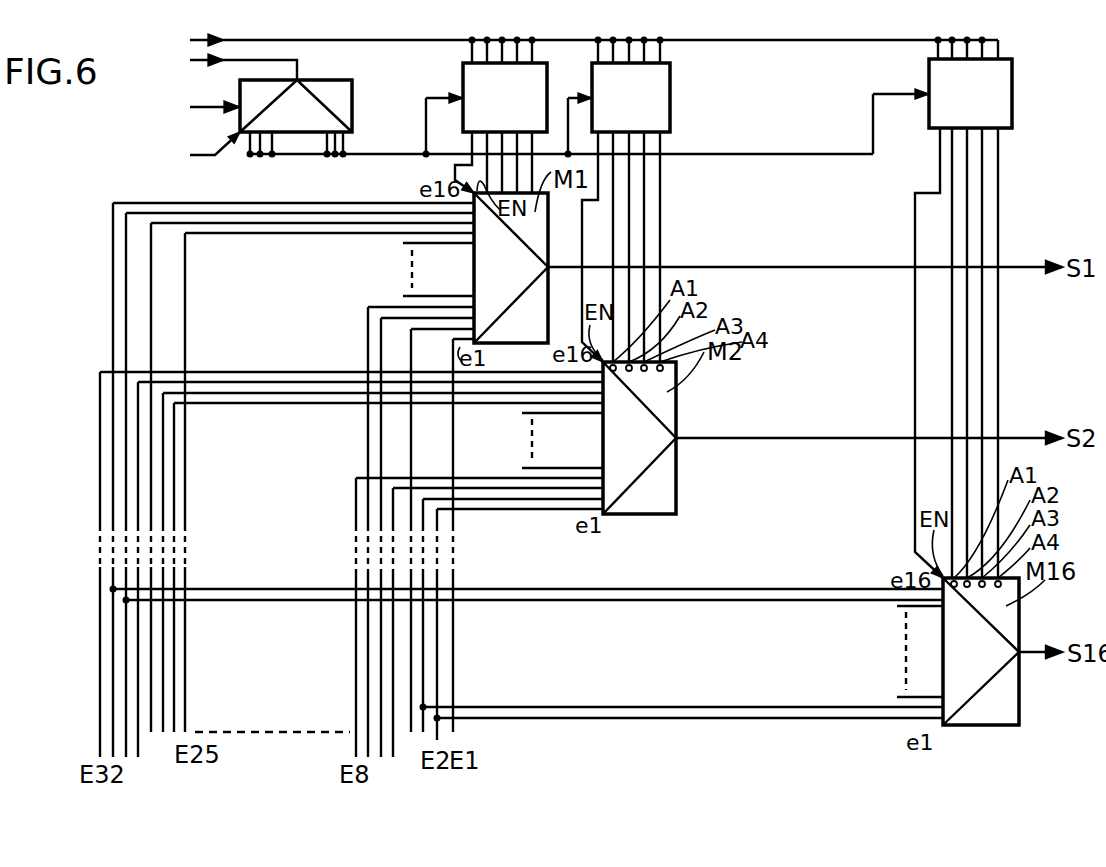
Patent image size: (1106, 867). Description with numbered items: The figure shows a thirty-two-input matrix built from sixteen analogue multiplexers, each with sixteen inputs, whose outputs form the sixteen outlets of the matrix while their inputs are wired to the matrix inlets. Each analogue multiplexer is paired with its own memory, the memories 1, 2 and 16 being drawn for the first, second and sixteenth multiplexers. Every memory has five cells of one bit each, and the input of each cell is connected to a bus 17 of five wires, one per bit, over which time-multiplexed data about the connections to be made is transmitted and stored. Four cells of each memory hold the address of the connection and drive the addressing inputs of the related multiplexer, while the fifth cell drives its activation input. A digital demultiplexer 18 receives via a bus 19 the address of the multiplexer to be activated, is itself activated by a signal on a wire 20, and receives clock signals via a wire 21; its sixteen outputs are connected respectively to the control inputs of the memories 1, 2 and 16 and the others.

The memory 1 is at (540, 100).
The memory 2 is at (664, 103).
The memory 16 is at (1000, 95).
The bus 17 is at (446, 42).
The digital demultiplexer 18 is at (340, 106).
The bus 19 is at (192, 107).
The wire 20 is at (192, 155).
The wire 21 is at (192, 60).